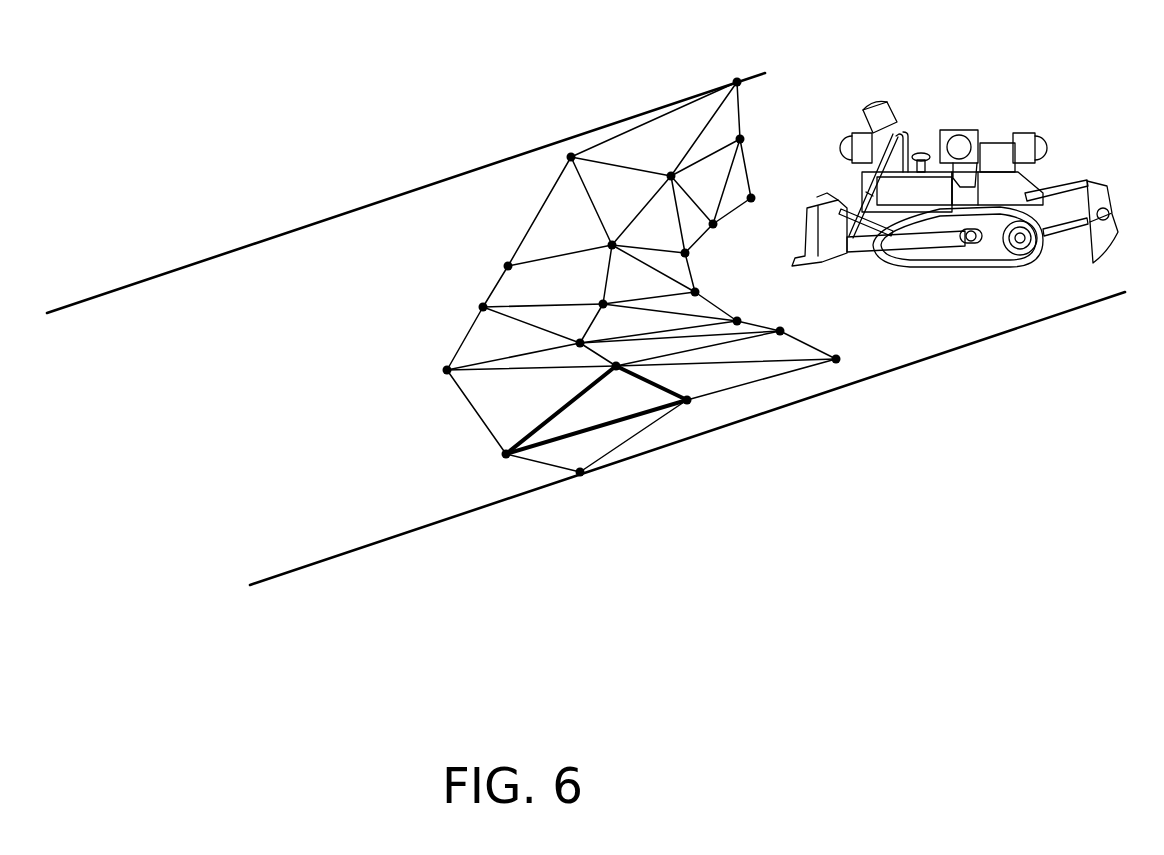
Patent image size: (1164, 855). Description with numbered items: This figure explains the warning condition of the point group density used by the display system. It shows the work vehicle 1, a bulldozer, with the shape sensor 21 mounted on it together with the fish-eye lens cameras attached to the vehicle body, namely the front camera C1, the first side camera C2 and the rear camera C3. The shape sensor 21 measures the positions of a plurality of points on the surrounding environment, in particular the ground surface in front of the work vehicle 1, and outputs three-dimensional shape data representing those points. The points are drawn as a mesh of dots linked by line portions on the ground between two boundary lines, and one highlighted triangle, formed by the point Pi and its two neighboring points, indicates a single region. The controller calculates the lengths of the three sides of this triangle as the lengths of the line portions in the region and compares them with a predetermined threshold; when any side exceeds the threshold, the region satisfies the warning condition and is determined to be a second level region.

The work vehicle 1 is at (1005, 113).
The shape sensor 21 is at (872, 103).
The front camera C1 is at (840, 135).
The first side camera C2 is at (950, 130).
The rear camera C3 is at (1043, 134).
The point Pi is at (499, 453).